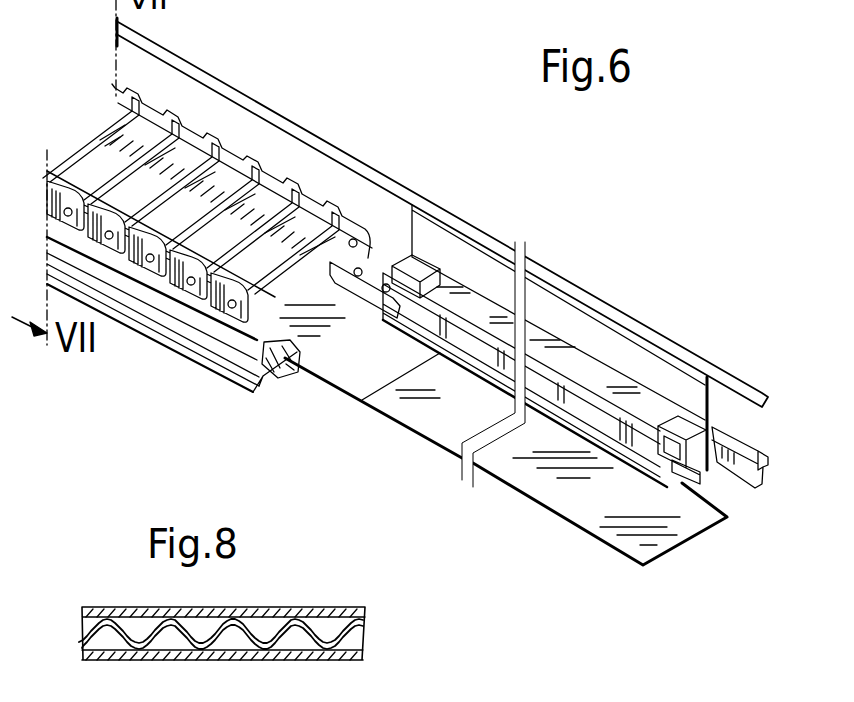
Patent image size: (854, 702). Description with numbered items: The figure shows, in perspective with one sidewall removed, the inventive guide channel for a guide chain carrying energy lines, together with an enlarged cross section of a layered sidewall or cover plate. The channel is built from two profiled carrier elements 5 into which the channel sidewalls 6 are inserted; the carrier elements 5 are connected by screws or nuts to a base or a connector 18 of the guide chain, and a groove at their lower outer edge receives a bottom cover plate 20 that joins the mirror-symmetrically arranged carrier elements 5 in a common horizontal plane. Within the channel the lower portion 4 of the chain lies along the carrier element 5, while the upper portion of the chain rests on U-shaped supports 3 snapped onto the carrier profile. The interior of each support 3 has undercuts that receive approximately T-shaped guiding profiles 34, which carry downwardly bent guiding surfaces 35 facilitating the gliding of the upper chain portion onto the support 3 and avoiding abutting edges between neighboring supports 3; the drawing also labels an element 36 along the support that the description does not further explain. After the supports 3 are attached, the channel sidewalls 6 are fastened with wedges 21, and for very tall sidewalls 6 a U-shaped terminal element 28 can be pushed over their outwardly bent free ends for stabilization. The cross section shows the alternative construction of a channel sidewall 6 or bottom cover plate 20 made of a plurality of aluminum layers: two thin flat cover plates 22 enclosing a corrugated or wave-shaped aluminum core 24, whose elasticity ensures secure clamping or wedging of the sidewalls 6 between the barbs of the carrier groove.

In FIG. 6, the support 3 is at (647, 400).
In FIG. 6, the lower portion 4 is at (173, 313).
In FIG. 6, the profiled carrier element 5 is at (220, 392).
In FIG. 6, the channel sidewall 6 is at (314, 172).
In FIG. 6, the connector 18 is at (272, 388).
In FIG. 6, the bottom cover plate 20 is at (362, 368).
In FIG. 6, the wedge 21 is at (770, 451).
In FIG. 8, the cover plate 22 is at (82, 612).
In FIG. 8, the aluminum core 24 is at (366, 633).
In FIG. 6, the U-shaped terminal element 28 is at (745, 380).
In FIG. 6, the guiding profile 34 is at (441, 250).
In FIG. 6, the guiding surface 35 is at (745, 500).
In FIG. 6, the support profile 36 is at (568, 347).